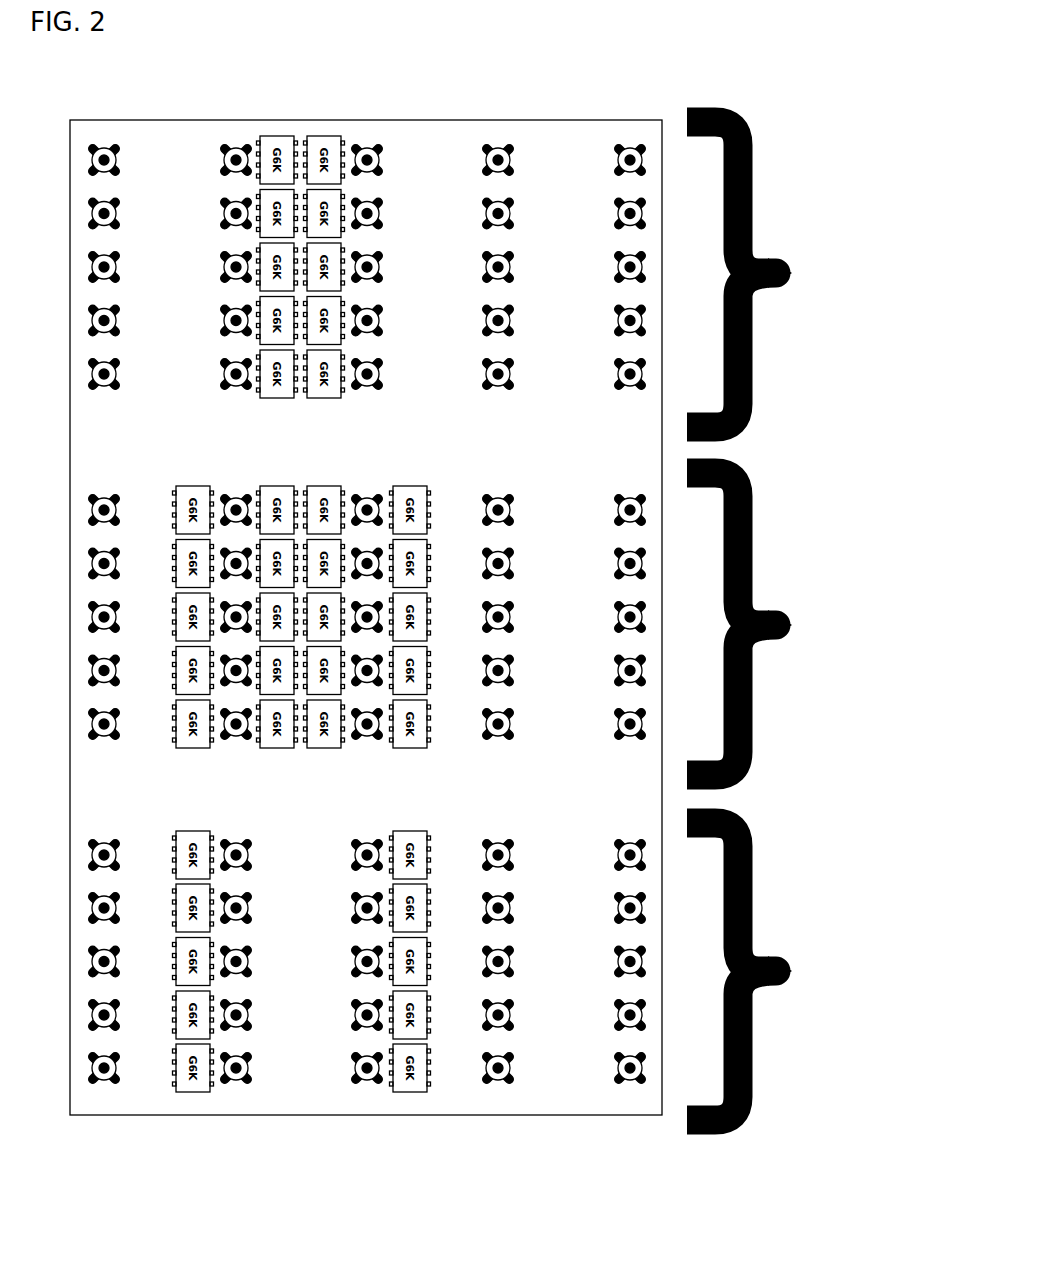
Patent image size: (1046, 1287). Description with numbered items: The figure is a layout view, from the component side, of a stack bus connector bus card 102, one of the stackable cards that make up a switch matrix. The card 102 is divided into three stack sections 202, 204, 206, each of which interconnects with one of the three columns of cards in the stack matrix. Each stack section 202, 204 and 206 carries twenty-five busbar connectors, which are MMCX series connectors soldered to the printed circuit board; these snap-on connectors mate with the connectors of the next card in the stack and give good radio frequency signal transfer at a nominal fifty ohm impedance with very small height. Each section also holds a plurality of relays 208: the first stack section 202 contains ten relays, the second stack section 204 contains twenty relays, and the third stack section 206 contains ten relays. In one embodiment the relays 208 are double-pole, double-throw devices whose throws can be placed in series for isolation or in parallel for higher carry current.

The stack bus connector bus card 102 is at (437, 118).
The stack section 202 is at (489, 250).
The stack section 204 is at (757, 545).
The stack section 206 is at (758, 893).
The relay 208 is at (272, 130).